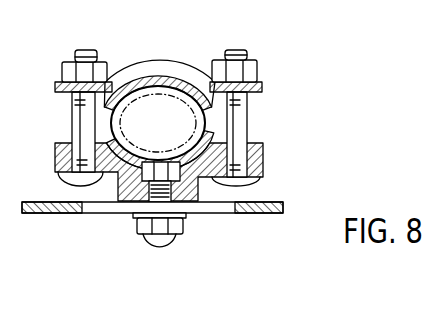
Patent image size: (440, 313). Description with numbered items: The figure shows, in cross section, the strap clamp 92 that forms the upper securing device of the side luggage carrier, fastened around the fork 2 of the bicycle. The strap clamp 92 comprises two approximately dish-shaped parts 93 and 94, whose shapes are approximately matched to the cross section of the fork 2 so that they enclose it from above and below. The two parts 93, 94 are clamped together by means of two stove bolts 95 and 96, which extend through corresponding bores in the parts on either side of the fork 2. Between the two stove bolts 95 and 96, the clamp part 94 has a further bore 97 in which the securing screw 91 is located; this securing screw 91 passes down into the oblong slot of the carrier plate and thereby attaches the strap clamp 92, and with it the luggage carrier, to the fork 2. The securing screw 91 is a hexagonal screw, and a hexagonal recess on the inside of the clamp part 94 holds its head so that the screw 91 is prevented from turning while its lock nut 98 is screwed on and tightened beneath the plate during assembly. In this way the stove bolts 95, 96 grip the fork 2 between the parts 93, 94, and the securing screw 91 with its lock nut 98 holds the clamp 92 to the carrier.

The fork 2 is at (152, 86).
The securing screw 91 is at (136, 213).
The strap clamp 92 is at (272, 125).
The dish-shaped part 93 is at (186, 58).
The clamp part 94 is at (263, 164).
The stove bolt 95 is at (80, 124).
The stove bolt 96 is at (250, 117).
The further bore 97 is at (122, 202).
The lock nut 98 is at (161, 246).